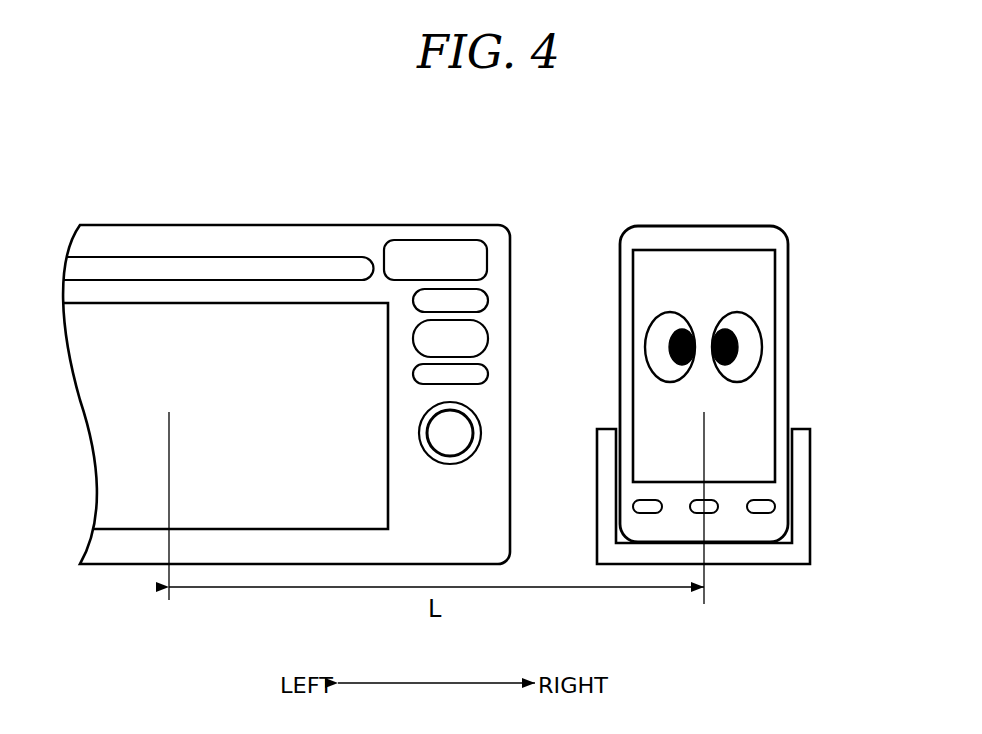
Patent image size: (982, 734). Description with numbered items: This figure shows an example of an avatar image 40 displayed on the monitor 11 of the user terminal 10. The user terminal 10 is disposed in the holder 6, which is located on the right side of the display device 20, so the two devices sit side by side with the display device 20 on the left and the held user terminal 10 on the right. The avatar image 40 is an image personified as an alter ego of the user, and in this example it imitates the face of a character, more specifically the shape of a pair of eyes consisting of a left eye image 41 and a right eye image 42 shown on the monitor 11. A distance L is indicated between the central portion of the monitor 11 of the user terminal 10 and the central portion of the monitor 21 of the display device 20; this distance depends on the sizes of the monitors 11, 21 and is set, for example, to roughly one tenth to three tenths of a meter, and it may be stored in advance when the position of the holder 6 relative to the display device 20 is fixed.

The display device 20 is at (310, 375).
The monitor 21 is at (372, 492).
The user terminal 10 is at (713, 384).
The monitor 11 is at (760, 295).
The avatar image 40 is at (713, 372).
The left eye image 41 is at (763, 345).
The right eye image 42 is at (645, 352).
The holder 6 is at (812, 493).